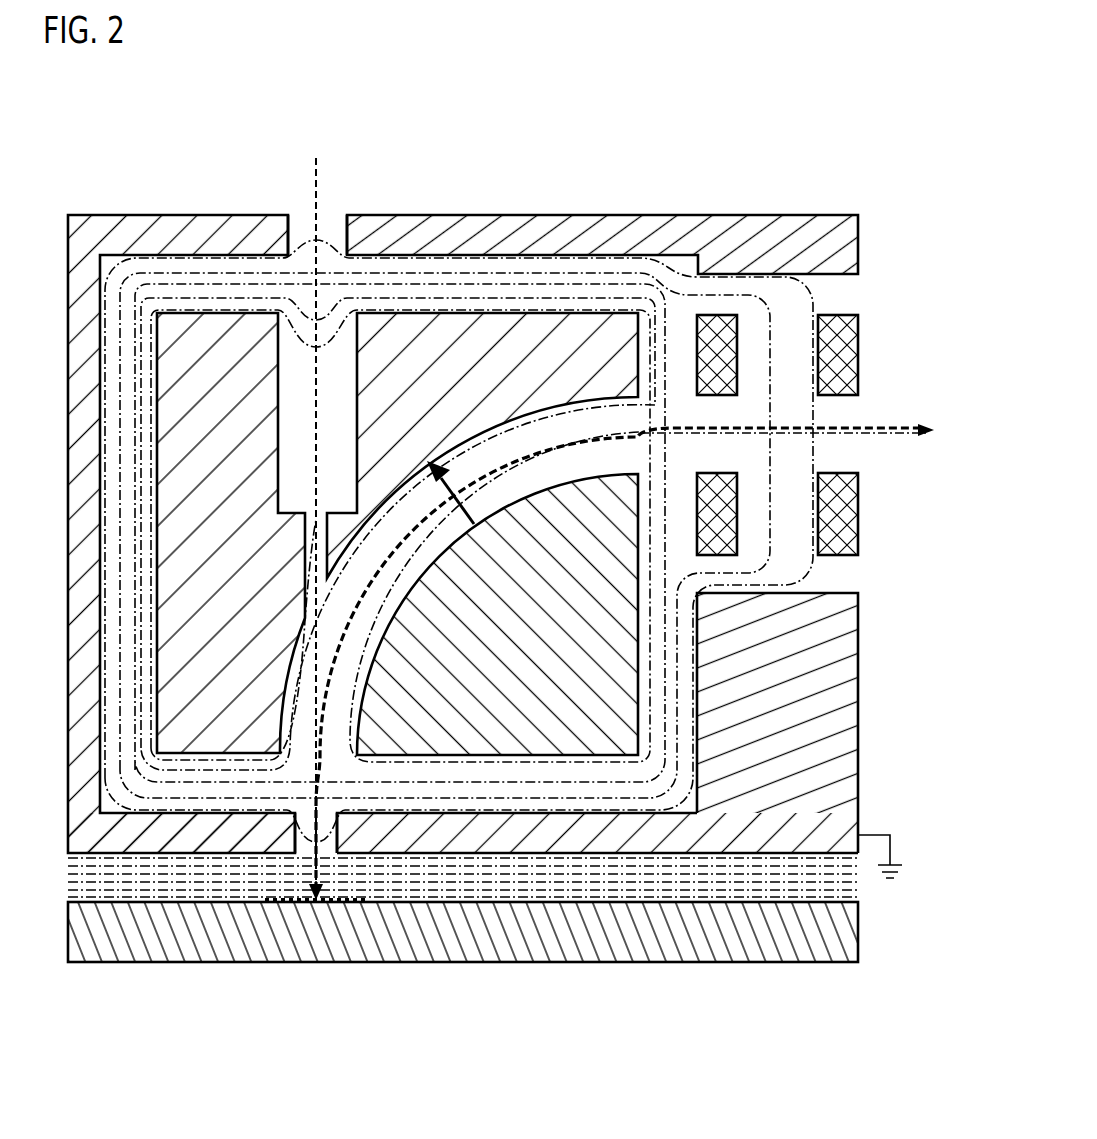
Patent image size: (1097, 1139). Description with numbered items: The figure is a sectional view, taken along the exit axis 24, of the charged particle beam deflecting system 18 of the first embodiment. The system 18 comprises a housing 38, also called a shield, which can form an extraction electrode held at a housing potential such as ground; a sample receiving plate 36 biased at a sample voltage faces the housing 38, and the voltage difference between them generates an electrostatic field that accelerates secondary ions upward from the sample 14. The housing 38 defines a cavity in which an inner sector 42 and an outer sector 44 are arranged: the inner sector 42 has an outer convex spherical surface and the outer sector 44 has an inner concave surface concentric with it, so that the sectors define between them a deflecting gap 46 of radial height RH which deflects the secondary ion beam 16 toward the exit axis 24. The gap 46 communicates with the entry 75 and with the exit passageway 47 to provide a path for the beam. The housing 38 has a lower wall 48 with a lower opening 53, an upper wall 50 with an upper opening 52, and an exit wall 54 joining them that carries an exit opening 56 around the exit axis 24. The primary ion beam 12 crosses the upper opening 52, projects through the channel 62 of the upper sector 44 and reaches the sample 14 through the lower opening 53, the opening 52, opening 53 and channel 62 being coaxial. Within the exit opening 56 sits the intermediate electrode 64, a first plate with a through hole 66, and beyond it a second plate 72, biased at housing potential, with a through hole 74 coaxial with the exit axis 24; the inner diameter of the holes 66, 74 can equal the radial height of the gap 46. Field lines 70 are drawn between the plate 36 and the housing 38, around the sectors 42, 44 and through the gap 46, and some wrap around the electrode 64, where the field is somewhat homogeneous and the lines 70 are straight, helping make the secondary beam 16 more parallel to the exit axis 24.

The primary ion beam 12 is at (318, 187).
The sample 14 is at (305, 895).
The secondary ion beam 16 is at (893, 425).
The charged particle beam deflecting system 18 is at (128, 132).
The exit axis 24 is at (913, 438).
The sample receiving plate 36 is at (778, 930).
The housing 38 is at (191, 230).
The inner sector 42 is at (508, 688).
The outer sector 44 is at (218, 457).
The deflecting gap 46 is at (542, 467).
The exit passageway 47 is at (650, 465).
The lower wall 48 is at (485, 832).
The upper wall 50 is at (590, 232).
The upper opening 52 is at (302, 232).
The lower opening 53 is at (322, 835).
The exit wall 54 is at (808, 750).
The exit opening 56 is at (802, 380).
The channel 62 is at (354, 435).
The intermediate electrode 64 is at (720, 328).
The through hole 66 is at (726, 420).
The field lines 70 is at (452, 272).
The second plate 72 is at (830, 325).
The through hole 74 is at (856, 465).
The entry 75 is at (310, 832).